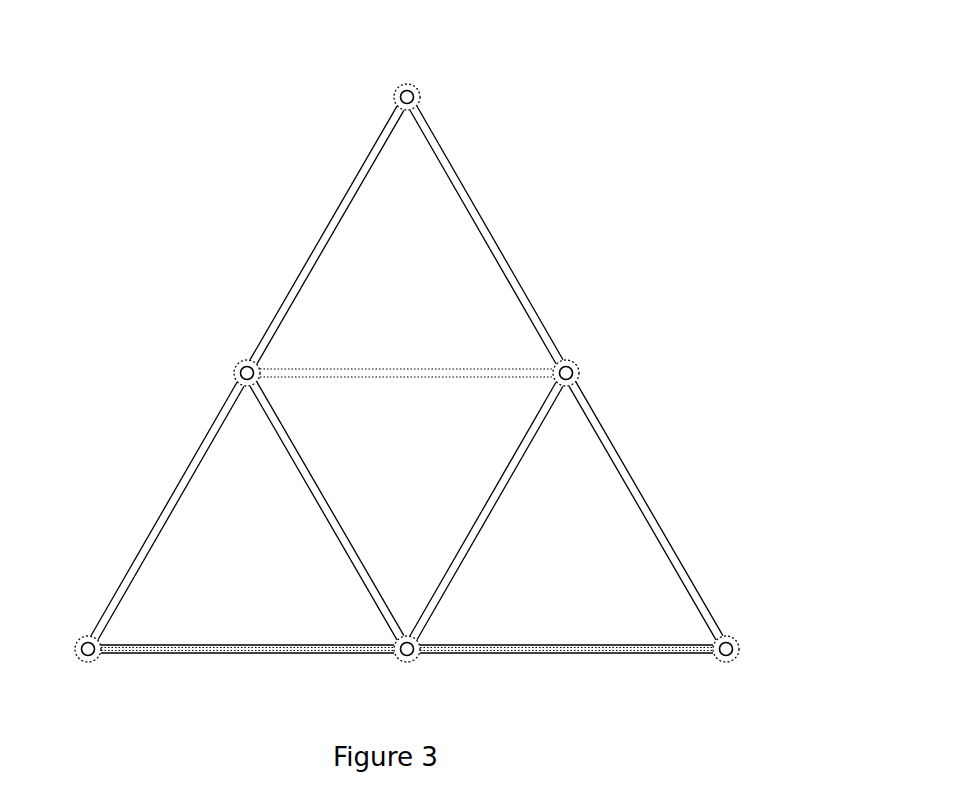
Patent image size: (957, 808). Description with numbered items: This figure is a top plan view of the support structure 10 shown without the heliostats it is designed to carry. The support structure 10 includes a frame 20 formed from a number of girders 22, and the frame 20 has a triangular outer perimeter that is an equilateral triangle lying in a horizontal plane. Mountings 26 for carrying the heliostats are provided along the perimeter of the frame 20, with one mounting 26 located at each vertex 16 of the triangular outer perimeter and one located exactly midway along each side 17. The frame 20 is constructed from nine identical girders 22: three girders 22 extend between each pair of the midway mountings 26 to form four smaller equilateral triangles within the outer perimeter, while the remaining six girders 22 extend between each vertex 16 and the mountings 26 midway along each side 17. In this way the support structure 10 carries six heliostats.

The support structure 10 is at (715, 98).
The vertex 16 is at (430, 88).
The side 17 is at (287, 257).
The frame 20 is at (627, 468).
The girder 22 is at (485, 240).
The mounting 26 is at (407, 84).